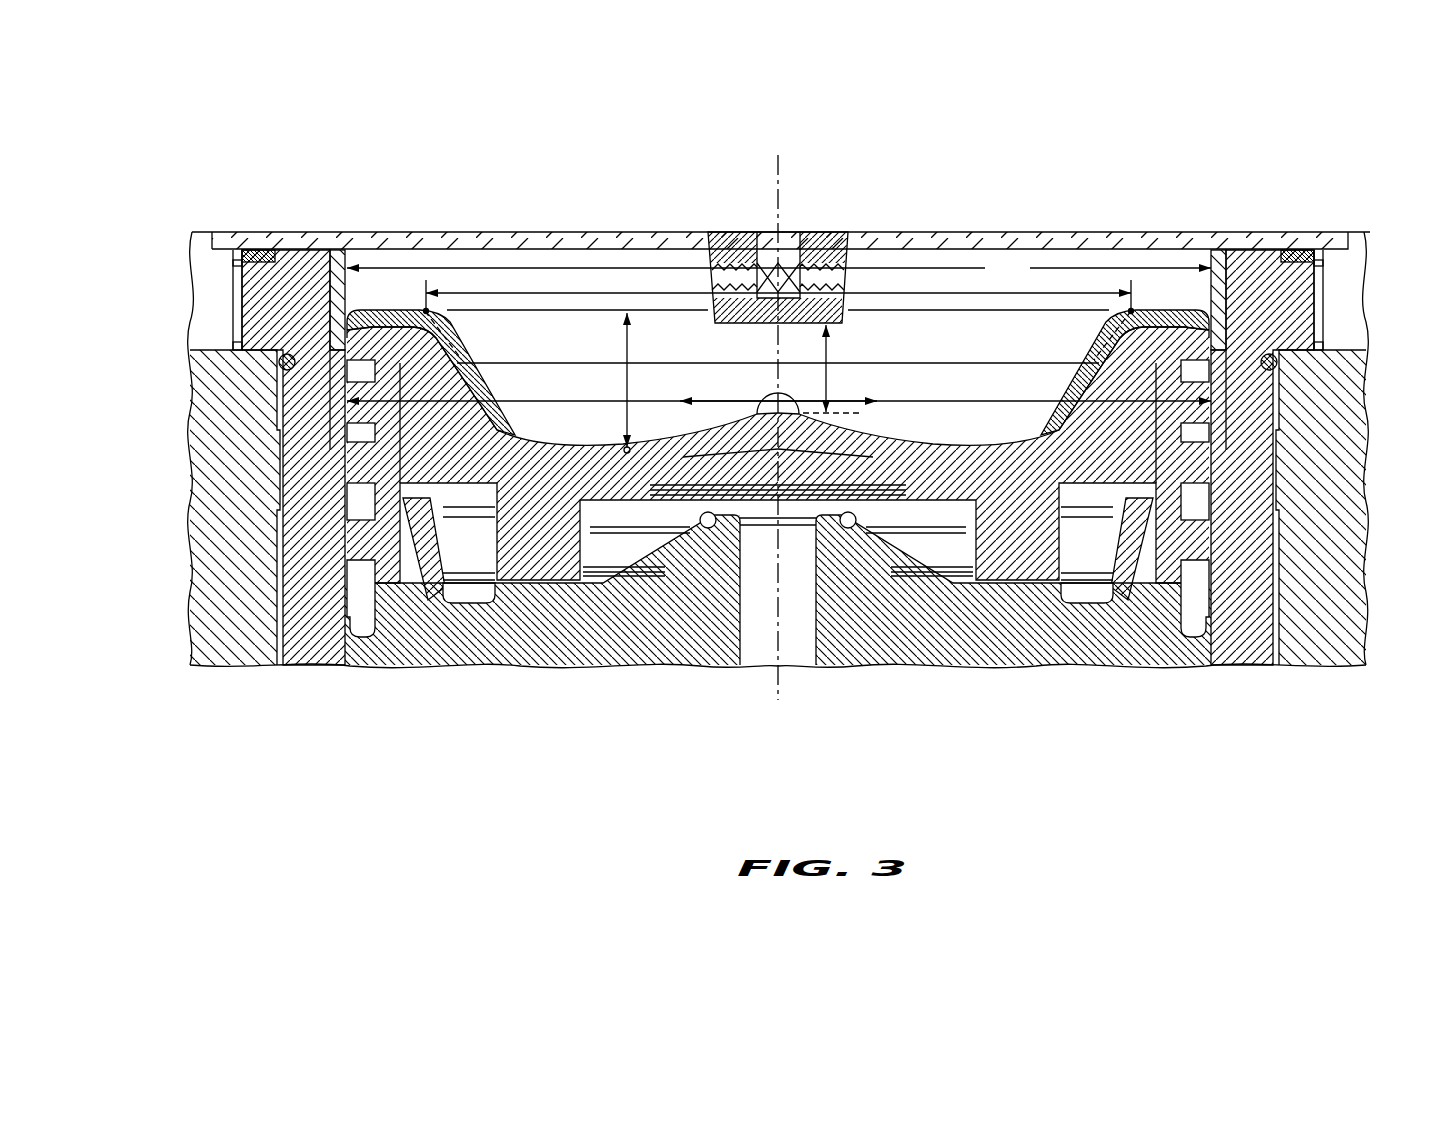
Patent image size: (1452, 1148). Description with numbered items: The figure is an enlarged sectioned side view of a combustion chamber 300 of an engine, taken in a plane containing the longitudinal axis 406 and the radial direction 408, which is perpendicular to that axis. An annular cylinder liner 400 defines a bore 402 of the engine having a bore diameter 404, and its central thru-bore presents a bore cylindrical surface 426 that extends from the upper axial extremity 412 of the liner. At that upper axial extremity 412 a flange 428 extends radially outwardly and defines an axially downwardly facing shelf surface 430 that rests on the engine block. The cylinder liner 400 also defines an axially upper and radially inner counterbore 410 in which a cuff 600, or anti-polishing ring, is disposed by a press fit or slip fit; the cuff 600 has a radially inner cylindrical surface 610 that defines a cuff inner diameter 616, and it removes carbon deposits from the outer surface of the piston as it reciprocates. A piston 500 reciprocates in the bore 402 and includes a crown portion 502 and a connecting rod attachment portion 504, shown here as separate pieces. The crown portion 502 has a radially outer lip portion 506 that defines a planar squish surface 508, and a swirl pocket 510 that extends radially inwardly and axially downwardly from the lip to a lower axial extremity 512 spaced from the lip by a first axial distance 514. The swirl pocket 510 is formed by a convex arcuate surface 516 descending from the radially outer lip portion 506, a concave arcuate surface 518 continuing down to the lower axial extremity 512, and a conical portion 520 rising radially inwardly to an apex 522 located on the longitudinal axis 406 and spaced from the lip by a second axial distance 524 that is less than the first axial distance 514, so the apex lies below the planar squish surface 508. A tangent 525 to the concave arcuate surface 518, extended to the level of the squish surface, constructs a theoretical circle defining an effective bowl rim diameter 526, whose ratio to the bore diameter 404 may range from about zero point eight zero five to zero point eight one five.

The combustion chamber 300 is at (1051, 283).
The cylinder liner 400 is at (314, 267).
The bore 402 is at (1198, 592).
The bore diameter 404 is at (918, 398).
The longitudinal axis 406 is at (781, 177).
The radial direction 408 is at (737, 397).
The axially upper and radially inner counterbore 410 is at (1238, 283).
The upper axial extremity 412 is at (1248, 243).
The bore cylindrical surface 426 is at (1213, 540).
The flange 428 is at (1290, 321).
The axially downwardly facing shelf surface 430 is at (1280, 364).
The piston 500 is at (701, 618).
The crown portion 502 is at (545, 335).
The connecting rod attachment portion 504 is at (473, 637).
The radially outer lip portion 506 is at (382, 306).
The planar squish surface 508 is at (1216, 320).
The swirl pocket 510 is at (1300, 262).
The lower axial extremity 512 is at (627, 460).
The first axial distance 514 is at (625, 397).
The convex arcuate surface 516 is at (447, 342).
The concave arcuate surface 518 is at (1318, 345).
The conical portion 520 is at (700, 437).
The apex 522 is at (803, 442).
The second axial distance 524 is at (828, 345).
The tangent 525 is at (462, 355).
The effective bowl rim diameter 526 is at (917, 292).
The cuff 600 is at (1151, 281).
The radially inner cylindrical surface 610 is at (1027, 285).
The cuff inner diameter 616 is at (646, 266).